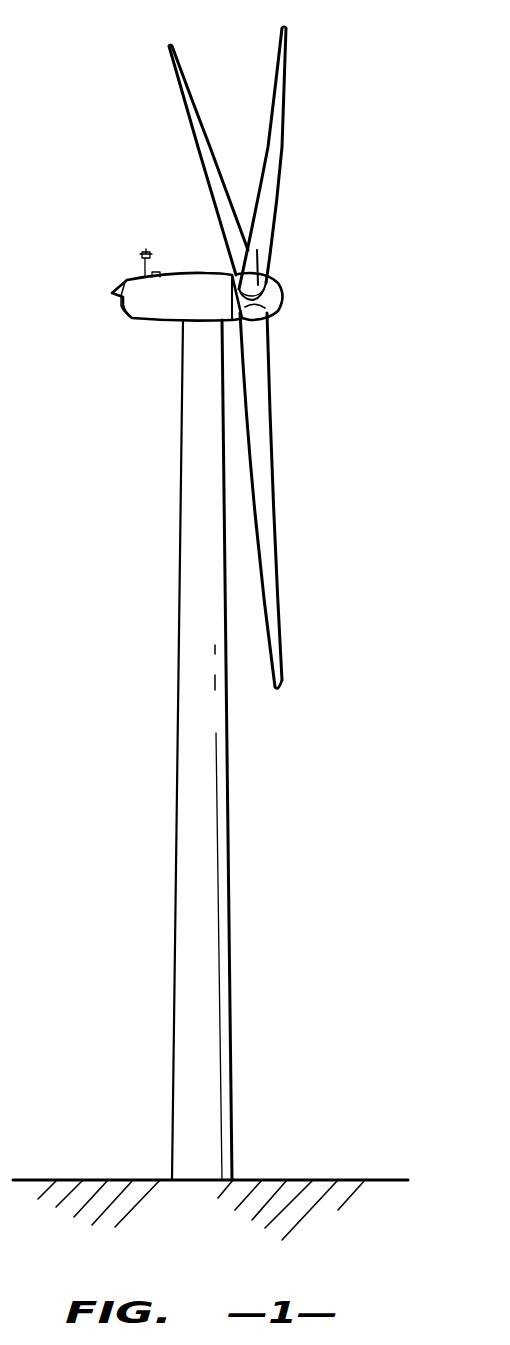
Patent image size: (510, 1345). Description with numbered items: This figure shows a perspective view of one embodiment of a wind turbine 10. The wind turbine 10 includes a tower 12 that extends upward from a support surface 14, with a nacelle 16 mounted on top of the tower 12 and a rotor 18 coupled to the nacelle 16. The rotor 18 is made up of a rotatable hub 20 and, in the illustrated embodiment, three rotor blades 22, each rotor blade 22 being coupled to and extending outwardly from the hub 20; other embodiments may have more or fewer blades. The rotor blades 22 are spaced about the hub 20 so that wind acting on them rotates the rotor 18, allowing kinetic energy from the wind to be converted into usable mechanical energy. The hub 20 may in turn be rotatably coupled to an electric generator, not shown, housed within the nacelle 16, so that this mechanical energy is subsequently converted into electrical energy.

The wind turbine 10 is at (398, 130).
The tower 12 is at (188, 867).
The support surface 14 is at (302, 1180).
The nacelle 16 is at (159, 323).
The rotor 18 is at (244, 358).
The rotatable hub 20 is at (273, 297).
The rotor blade 22 is at (192, 130).